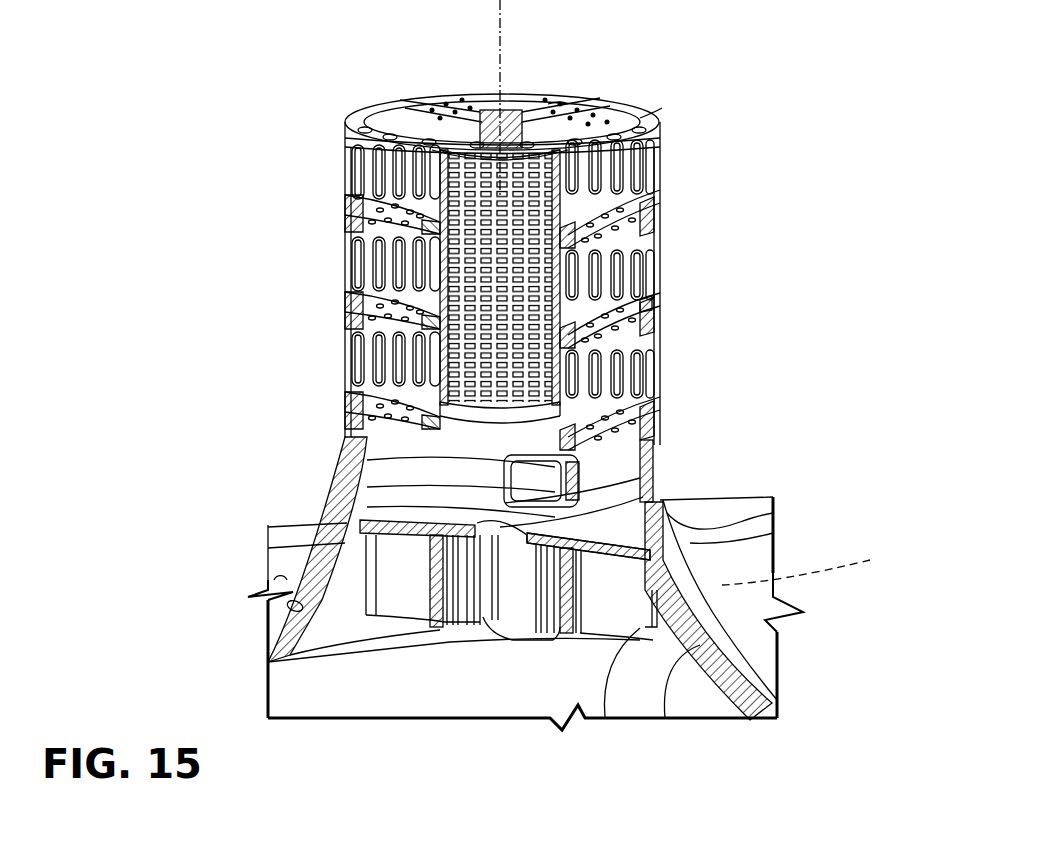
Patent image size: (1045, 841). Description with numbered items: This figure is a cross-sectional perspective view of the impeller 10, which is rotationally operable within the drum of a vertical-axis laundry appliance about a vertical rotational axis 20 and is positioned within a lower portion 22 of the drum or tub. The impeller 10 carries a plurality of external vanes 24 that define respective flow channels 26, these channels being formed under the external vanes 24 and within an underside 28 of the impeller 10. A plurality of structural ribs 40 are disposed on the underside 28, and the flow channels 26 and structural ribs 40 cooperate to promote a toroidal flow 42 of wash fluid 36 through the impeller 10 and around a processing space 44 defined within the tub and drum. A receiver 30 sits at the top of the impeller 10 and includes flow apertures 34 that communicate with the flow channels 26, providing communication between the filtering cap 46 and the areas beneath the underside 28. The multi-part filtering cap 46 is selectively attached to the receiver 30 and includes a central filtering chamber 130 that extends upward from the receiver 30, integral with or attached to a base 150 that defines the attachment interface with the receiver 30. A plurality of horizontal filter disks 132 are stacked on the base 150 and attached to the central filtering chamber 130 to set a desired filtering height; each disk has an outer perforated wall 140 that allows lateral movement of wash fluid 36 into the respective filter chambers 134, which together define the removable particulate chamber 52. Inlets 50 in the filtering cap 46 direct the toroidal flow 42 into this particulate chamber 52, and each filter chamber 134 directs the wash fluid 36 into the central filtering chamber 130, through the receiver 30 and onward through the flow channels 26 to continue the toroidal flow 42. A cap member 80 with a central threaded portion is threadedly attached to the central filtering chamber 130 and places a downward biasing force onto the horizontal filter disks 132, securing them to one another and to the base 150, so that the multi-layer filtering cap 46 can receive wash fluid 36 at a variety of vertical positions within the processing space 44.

The impeller 10 is at (802, 477).
The vertical rotational axis 20 is at (500, 48).
The lower portion 22 is at (288, 526).
The external vanes 24 is at (742, 540).
The flow channels 26 is at (811, 561).
The underside 28 is at (722, 668).
The receiver 30 is at (355, 497).
The flow apertures 34 is at (573, 483).
The wash fluid 36 is at (676, 188).
The structural ribs 40 is at (622, 655).
The toroidal flow 42 is at (352, 103).
The processing space 44 is at (322, 203).
The filtering cap 46 is at (330, 294).
The inlets 50 is at (565, 100).
The removable particulate chamber 52 is at (366, 164).
The cap member 80 is at (643, 120).
The central filtering chamber 130 is at (440, 277).
The horizontal filter disks 132 is at (640, 290).
The filter chambers 134 is at (472, 442).
The outer perforated wall 140 is at (650, 308).
The base 150 is at (647, 487).